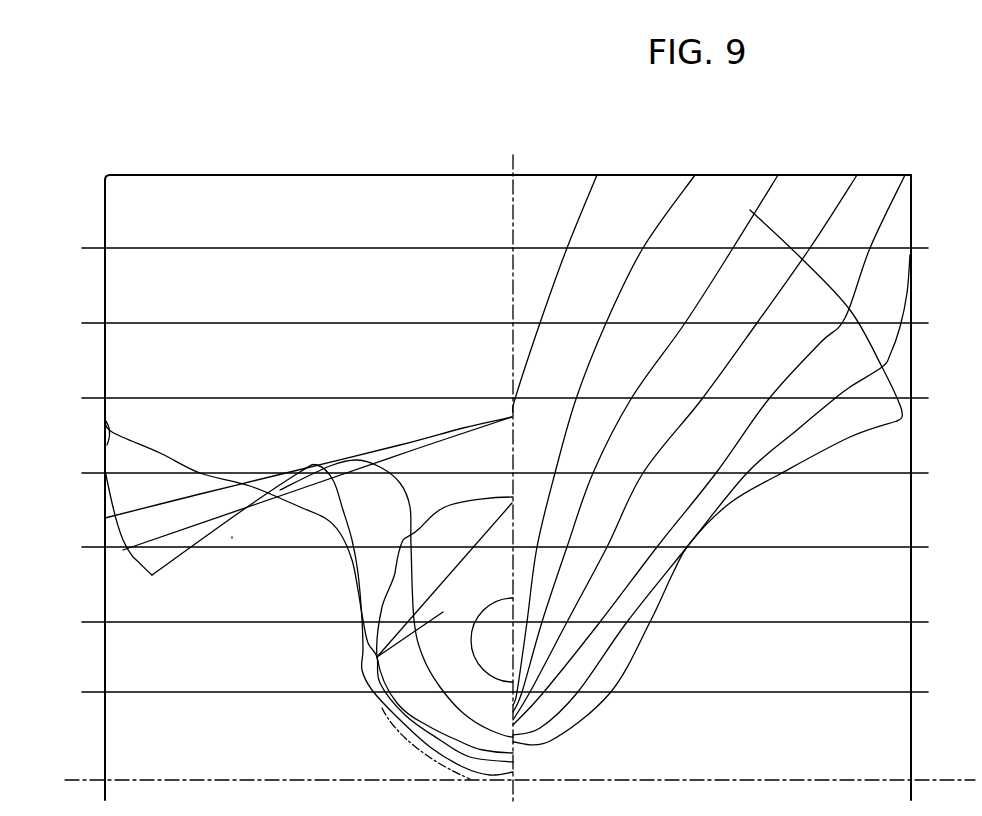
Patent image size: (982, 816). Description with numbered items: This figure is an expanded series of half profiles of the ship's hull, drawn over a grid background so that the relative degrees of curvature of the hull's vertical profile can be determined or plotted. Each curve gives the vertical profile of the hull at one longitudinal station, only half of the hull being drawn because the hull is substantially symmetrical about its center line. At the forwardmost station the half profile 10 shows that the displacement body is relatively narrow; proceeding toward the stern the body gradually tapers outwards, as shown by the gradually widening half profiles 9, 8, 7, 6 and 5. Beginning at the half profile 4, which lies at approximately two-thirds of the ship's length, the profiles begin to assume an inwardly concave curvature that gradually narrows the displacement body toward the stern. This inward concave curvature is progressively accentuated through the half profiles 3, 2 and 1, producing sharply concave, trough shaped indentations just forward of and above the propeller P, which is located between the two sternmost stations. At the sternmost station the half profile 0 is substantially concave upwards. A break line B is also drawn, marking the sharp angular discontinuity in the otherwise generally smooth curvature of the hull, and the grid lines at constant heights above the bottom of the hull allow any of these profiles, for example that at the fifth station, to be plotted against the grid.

The hull profile at longitudinal position 0 is at (232, 537).
The hull profile at longitudinal position 1 is at (176, 537).
The hull profile at longitudinal position 2 is at (146, 510).
The hull profile at longitudinal position 3 is at (140, 471).
The hull profile at longitudinal position 4 is at (160, 453).
The hull profile at longitudinal position 5 is at (729, 495).
The hull profile at longitudinal position 6 is at (729, 450).
The hull profile at longitudinal position 7 is at (729, 447).
The hull profile at longitudinal position 8 is at (645, 443).
The hull profile at longitudinal position 9 is at (604, 440).
The hull profile at longitudinal position 10 is at (554, 293).
The break line B is at (845, 290).
The propeller P is at (385, 712).